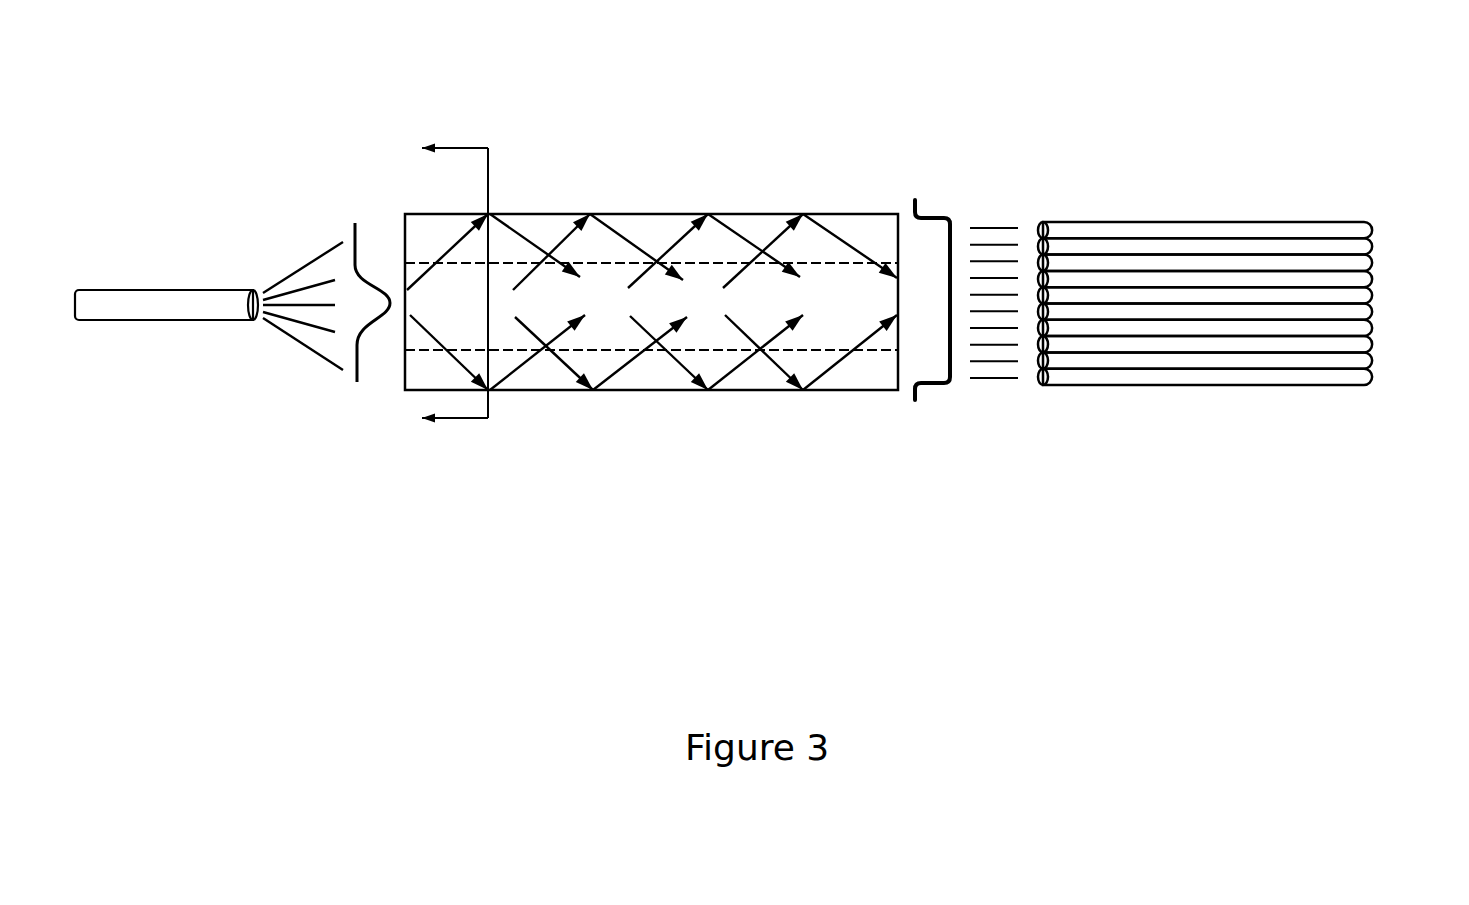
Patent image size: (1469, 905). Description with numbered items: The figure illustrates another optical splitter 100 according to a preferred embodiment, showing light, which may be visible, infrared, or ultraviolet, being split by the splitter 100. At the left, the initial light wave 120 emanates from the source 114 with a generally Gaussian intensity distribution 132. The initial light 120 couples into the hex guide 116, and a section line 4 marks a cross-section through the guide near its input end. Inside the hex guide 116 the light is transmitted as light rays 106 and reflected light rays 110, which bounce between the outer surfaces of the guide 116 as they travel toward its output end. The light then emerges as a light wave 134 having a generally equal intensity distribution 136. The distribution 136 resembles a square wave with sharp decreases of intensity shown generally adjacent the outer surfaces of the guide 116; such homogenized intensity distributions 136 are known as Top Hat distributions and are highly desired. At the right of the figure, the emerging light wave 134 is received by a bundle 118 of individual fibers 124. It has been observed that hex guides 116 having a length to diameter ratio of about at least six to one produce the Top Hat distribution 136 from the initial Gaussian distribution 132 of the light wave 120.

The optical splitter 100 is at (722, 137).
The section line 4- 4 is at (455, 283).
The light rays 106 is at (448, 250).
The reflected light rays 110 is at (523, 240).
The source 114 is at (110, 290).
The hex guide 116 is at (662, 392).
The fiber bundle 118 is at (1148, 158).
The initial light wave 120 is at (318, 262).
The optical fiber 124 is at (1246, 222).
The Gaussian intensity distribution 132 is at (358, 397).
The light wave 134 is at (990, 380).
The equal intensity distribution 136 is at (950, 218).